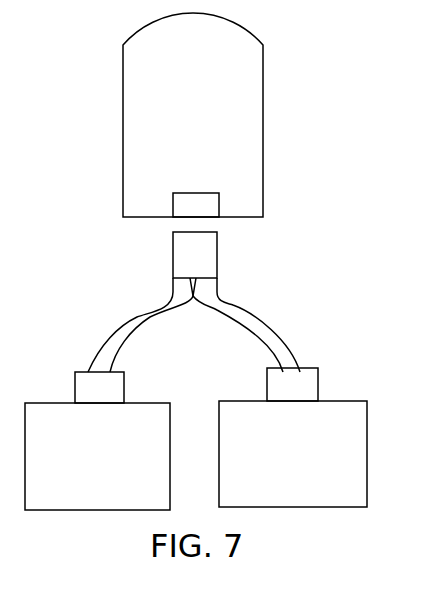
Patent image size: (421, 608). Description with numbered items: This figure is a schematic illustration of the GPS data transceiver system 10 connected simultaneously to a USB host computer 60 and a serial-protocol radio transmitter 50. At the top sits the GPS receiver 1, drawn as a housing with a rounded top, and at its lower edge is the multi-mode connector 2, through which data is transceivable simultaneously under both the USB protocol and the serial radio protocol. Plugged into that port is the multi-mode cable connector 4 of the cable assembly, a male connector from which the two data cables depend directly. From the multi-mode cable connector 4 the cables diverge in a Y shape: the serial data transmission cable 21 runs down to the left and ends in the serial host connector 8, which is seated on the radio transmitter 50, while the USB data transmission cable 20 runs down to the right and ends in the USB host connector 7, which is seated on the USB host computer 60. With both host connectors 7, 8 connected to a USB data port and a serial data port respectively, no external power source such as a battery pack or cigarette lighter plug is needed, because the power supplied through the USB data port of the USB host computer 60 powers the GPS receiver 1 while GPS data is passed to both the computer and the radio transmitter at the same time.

The GPS receiver 1 is at (142, 113).
The GPS data transceiver system 10 is at (216, 115).
The multi-mode connector 2 is at (180, 208).
The multi-mode cable connector 4 is at (202, 262).
The USB data transmission cable 20 is at (255, 320).
The RS-232 data transmission cable 21 is at (133, 322).
The USB host connector 7 is at (310, 388).
The RS-232 host connector 8 is at (118, 386).
The RS-232 radio transmitter 50 is at (60, 388).
The USB host computer 60 is at (362, 390).